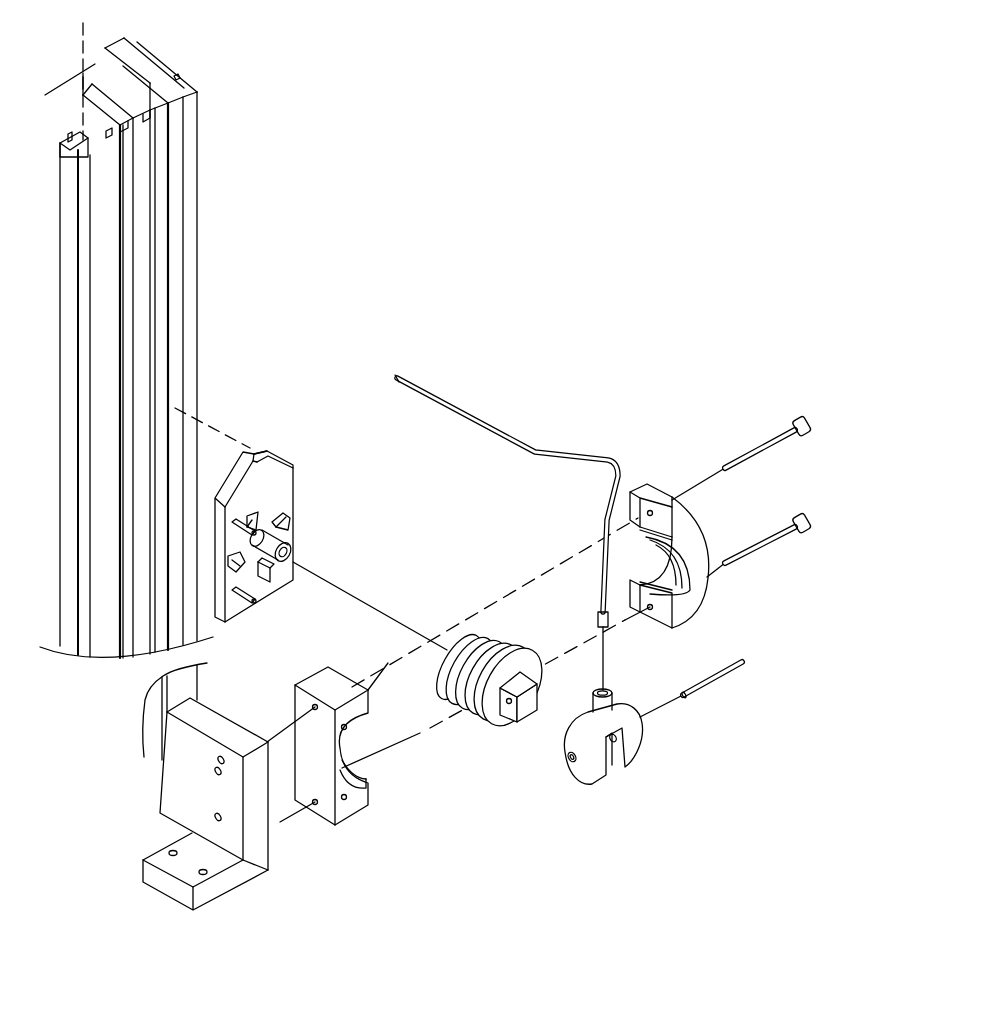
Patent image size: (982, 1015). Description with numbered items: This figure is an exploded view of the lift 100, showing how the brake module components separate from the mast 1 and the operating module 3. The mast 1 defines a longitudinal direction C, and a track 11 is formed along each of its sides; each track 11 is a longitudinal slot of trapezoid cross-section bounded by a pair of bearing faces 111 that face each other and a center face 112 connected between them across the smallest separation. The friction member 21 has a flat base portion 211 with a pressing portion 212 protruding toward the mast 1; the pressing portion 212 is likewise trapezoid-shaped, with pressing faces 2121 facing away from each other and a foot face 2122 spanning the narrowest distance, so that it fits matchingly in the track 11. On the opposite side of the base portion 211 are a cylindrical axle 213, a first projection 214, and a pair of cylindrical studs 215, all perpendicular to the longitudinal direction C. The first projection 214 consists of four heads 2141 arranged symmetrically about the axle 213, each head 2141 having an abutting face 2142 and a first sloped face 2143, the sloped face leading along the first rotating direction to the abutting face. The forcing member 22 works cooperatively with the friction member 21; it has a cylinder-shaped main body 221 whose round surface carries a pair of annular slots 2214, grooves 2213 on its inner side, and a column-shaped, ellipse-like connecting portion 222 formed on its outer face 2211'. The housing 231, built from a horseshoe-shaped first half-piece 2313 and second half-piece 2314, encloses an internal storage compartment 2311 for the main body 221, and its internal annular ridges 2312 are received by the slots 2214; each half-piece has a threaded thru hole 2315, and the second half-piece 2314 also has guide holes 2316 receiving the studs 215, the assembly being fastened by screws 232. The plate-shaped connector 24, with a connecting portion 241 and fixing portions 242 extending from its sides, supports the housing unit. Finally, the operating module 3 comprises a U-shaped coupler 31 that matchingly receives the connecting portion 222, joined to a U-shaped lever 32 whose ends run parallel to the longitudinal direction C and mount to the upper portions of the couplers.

The lift 100 is at (540, 28).
The mast 1 is at (210, 268).
The track 11 is at (258, 47).
The bearing face 111 is at (140, 125).
The center face 112 is at (178, 82).
The longitudinal direction C is at (86, 34).
The friction member 21 is at (379, 432).
The base portion 211 is at (250, 491).
The pressing portion 212 is at (268, 460).
The pressing face 2121 is at (253, 463).
The foot face 2122 is at (257, 456).
The axle 213 is at (290, 547).
The first projection 214 is at (292, 513).
The stud 215 is at (265, 545).
The head 2141 is at (330, 653).
The abutting face 2142 is at (290, 560).
The first sloped face 2143 is at (285, 568).
The forcing member 22 is at (552, 775).
The main body 221 is at (463, 713).
The connecting portion 222 is at (526, 708).
The outer face 2211' is at (522, 674).
The groove 2213 is at (460, 643).
The annular slot 2214 is at (477, 683).
The housing 231 is at (700, 436).
The internal storage compartment 2311 is at (637, 553).
The internal annular ridge 2312 is at (677, 580).
The first half-piece 2313 is at (653, 493).
The second half-piece 2314 is at (343, 812).
The threaded thru hole 2315 is at (697, 513).
The guide hole 2316 is at (345, 795).
The screw 232 is at (762, 448).
The connector 24 is at (97, 757).
The connecting portion 241 is at (153, 745).
The fixing portion 242 is at (185, 807).
The operating module 3 is at (510, 525).
The coupler 31 is at (633, 740).
The lever 32 is at (598, 530).